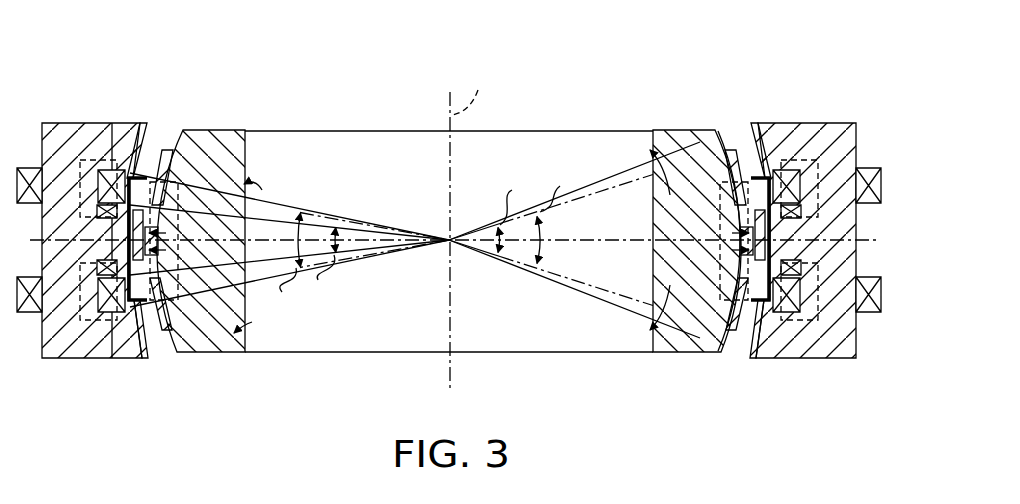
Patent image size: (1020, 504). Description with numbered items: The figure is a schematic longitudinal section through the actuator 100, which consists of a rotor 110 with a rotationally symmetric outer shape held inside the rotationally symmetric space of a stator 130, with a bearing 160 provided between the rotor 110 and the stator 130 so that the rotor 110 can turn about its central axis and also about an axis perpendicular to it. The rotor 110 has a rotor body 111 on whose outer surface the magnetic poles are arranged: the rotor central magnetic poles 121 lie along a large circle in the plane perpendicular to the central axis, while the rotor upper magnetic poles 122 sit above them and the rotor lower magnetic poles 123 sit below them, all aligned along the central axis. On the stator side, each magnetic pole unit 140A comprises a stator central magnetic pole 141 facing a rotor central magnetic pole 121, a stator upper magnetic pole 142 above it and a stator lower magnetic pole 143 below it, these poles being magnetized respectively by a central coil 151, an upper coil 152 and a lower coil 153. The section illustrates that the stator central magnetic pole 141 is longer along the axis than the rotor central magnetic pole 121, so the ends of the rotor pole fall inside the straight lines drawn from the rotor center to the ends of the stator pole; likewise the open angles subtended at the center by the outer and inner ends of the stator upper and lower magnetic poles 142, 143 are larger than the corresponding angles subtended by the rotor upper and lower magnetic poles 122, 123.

The actuator 100 is at (162, 69).
The rotor 110 is at (234, 127).
The rotor body 111 is at (502, 148).
The rotor central magnetic pole 121 is at (688, 233).
The rotor upper magnetic pole 122 is at (737, 152).
The rotor lower magnetic pole 123 is at (738, 336).
The stator 130 is at (94, 116).
The magnetic pole unit 140A is at (86, 373).
The stator central magnetic pole 141 is at (802, 252).
The stator upper magnetic pole 142 is at (760, 150).
The stator lower magnetic pole 143 is at (755, 343).
The central coil 151 is at (820, 208).
The upper coil 152 is at (866, 172).
The lower coil 153 is at (869, 313).
The bearing 160 is at (246, 188).